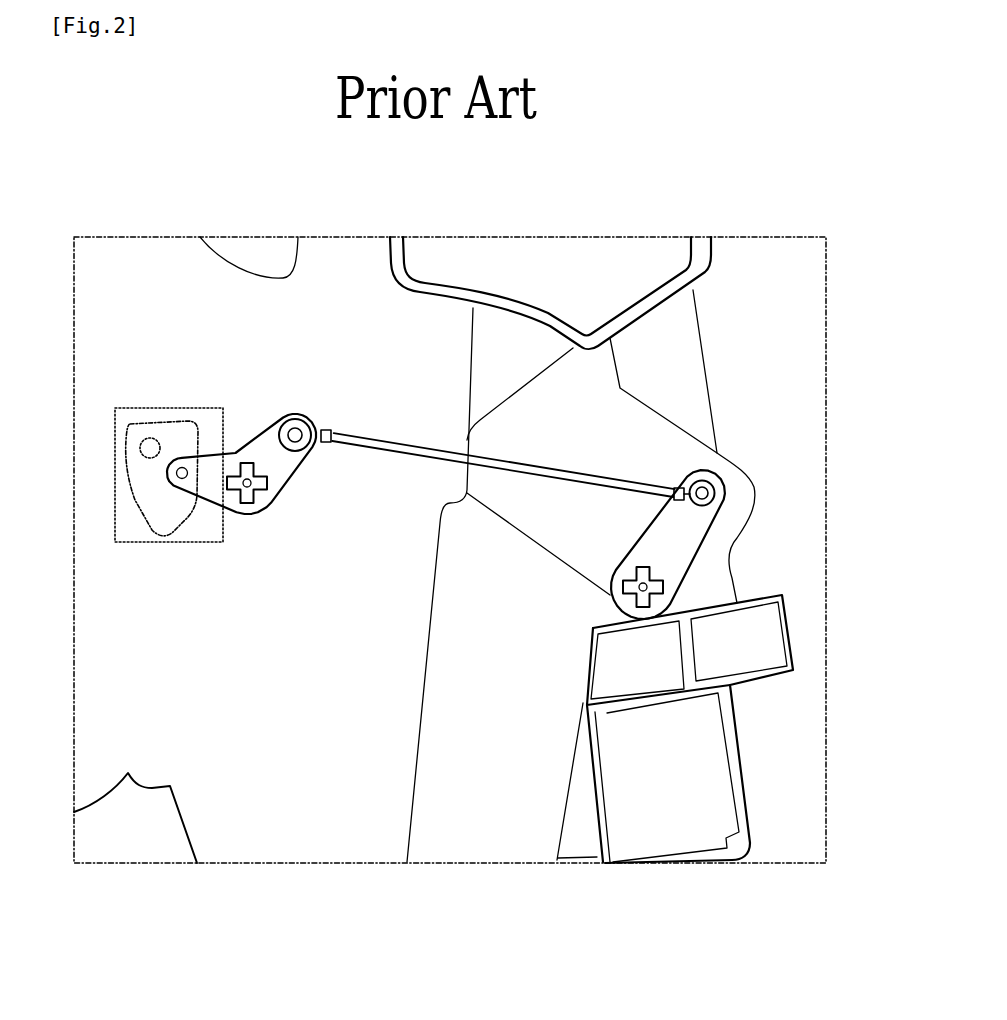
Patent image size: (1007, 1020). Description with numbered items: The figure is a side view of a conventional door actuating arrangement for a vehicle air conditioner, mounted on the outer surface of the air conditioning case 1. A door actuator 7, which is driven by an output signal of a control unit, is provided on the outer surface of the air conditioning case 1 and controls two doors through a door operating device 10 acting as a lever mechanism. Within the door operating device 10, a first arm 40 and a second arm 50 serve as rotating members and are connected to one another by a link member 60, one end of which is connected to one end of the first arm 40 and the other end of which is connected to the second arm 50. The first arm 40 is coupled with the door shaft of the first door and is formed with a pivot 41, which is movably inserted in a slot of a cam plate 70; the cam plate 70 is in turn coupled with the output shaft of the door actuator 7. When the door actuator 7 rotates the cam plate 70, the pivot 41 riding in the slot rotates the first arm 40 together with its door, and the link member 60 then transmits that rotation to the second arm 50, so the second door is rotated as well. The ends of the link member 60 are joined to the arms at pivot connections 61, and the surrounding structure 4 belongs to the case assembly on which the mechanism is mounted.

The air conditioning case 1 is at (358, 236).
The seat frame 4 is at (598, 254).
The door actuator 7 is at (117, 424).
The cam plate 70 is at (142, 420).
The door operating device 10 is at (503, 450).
The first arm 40 is at (239, 510).
The pivot 41 is at (183, 480).
The second arm 50 is at (647, 548).
The link member 60 is at (410, 452).
The pivot 61 is at (327, 430).